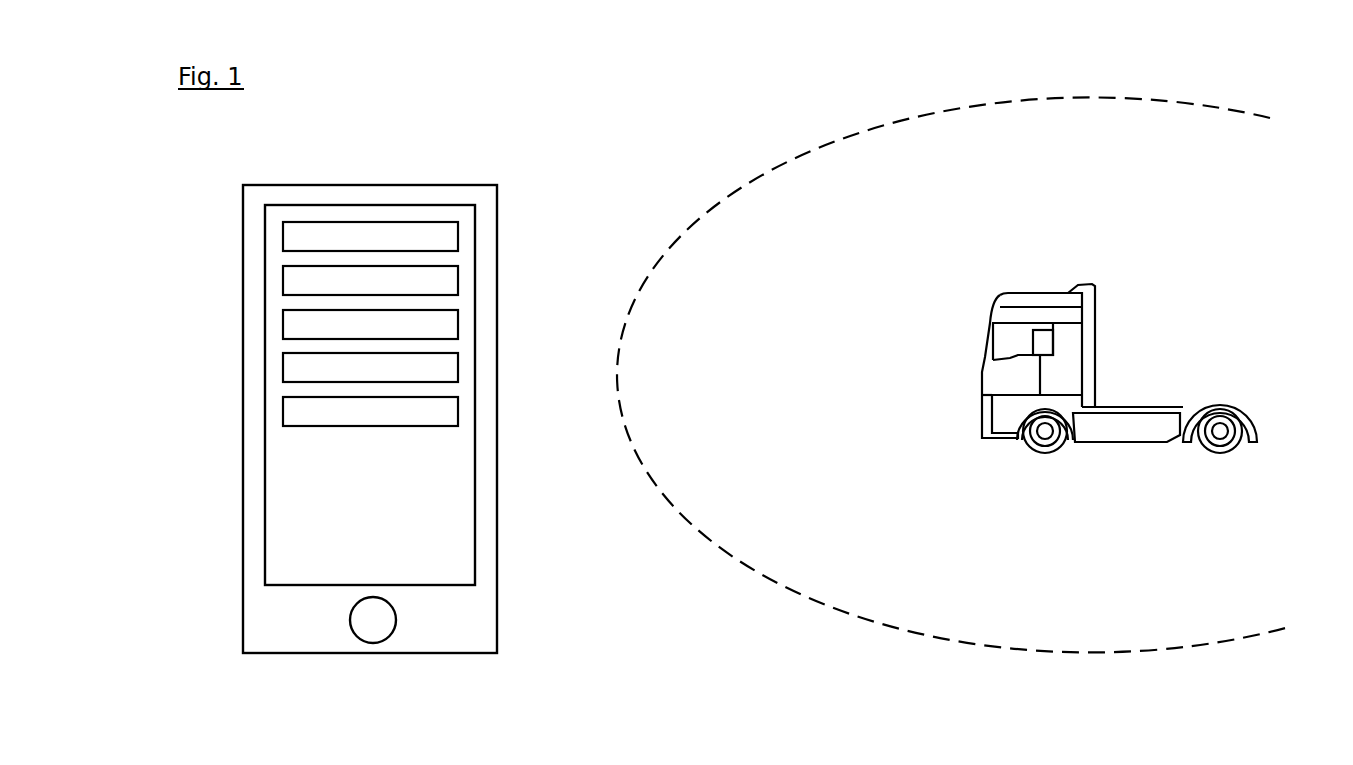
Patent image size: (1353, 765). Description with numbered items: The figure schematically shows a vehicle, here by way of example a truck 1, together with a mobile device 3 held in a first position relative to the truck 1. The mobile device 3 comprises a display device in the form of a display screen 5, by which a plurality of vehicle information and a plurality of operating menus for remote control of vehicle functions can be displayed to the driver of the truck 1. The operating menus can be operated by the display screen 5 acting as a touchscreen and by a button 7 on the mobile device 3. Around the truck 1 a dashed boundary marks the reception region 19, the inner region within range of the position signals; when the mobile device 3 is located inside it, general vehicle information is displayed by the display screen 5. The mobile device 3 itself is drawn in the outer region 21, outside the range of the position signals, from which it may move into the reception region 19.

The truck 1 is at (1130, 306).
The mobile device 3 is at (405, 402).
The display screen 5 is at (453, 461).
The button 7 is at (382, 628).
The reception region 19 is at (812, 350).
The outer region 21 is at (627, 160).